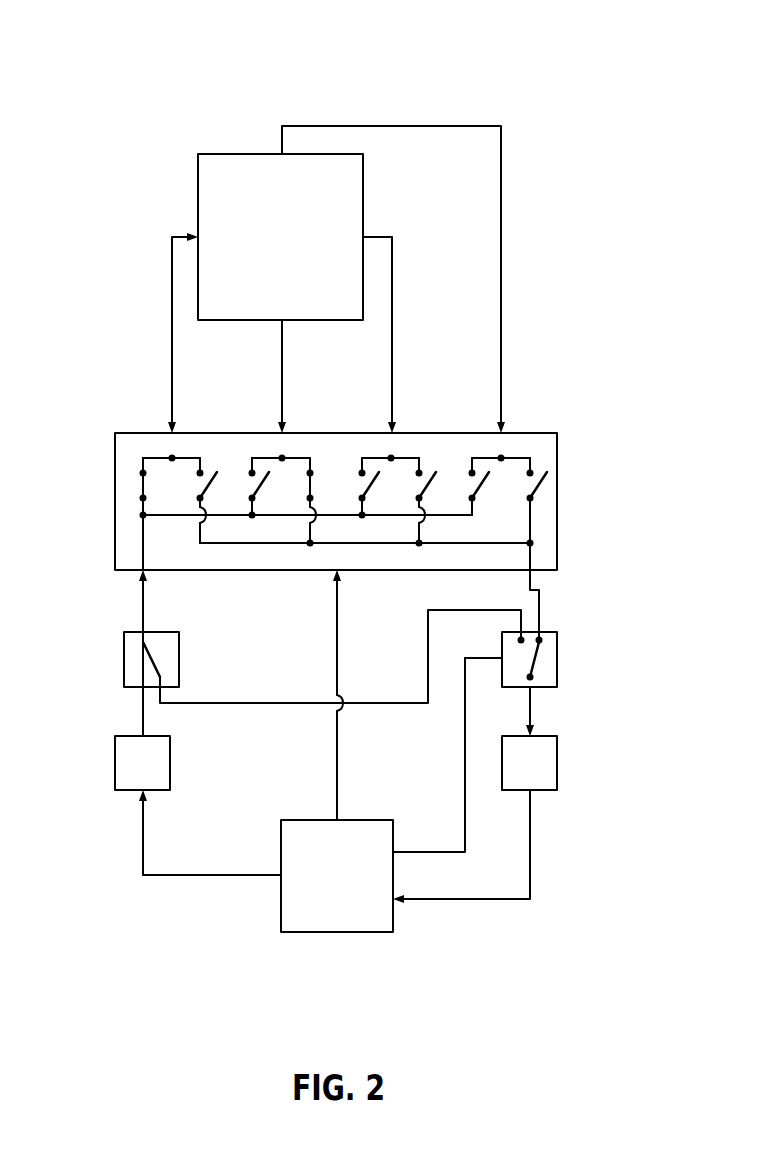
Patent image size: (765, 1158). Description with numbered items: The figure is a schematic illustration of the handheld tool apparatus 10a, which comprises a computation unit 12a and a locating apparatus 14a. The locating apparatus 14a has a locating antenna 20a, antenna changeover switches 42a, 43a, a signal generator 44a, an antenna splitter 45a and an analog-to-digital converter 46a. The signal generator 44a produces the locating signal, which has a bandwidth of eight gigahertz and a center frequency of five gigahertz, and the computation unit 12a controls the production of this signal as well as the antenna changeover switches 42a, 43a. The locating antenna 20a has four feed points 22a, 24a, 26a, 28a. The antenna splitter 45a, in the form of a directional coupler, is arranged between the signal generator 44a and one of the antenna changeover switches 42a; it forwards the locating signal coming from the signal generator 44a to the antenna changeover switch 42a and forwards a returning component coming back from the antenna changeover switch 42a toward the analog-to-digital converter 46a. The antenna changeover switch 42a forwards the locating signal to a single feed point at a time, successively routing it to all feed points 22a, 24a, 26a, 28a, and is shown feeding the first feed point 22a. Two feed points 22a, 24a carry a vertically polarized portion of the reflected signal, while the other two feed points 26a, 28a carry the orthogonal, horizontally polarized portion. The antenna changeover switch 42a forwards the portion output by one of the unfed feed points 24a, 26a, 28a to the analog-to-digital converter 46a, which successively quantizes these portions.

The handheld tool apparatus 10a is at (492, 70).
The computation unit 12a is at (340, 934).
The locating apparatus 14a is at (553, 115).
The locating antenna 20a is at (217, 152).
The feed point 22a is at (198, 237).
The feed point 24a is at (280, 151).
The feed point 26a is at (364, 237).
The feed point 28a is at (282, 322).
The antenna changeover switch 42a is at (557, 500).
The antenna changeover switch 43a is at (557, 660).
The signal generator 44a is at (115, 764).
The antenna splitter 45a is at (123, 658).
The analog-to-digital converter 46a is at (557, 762).